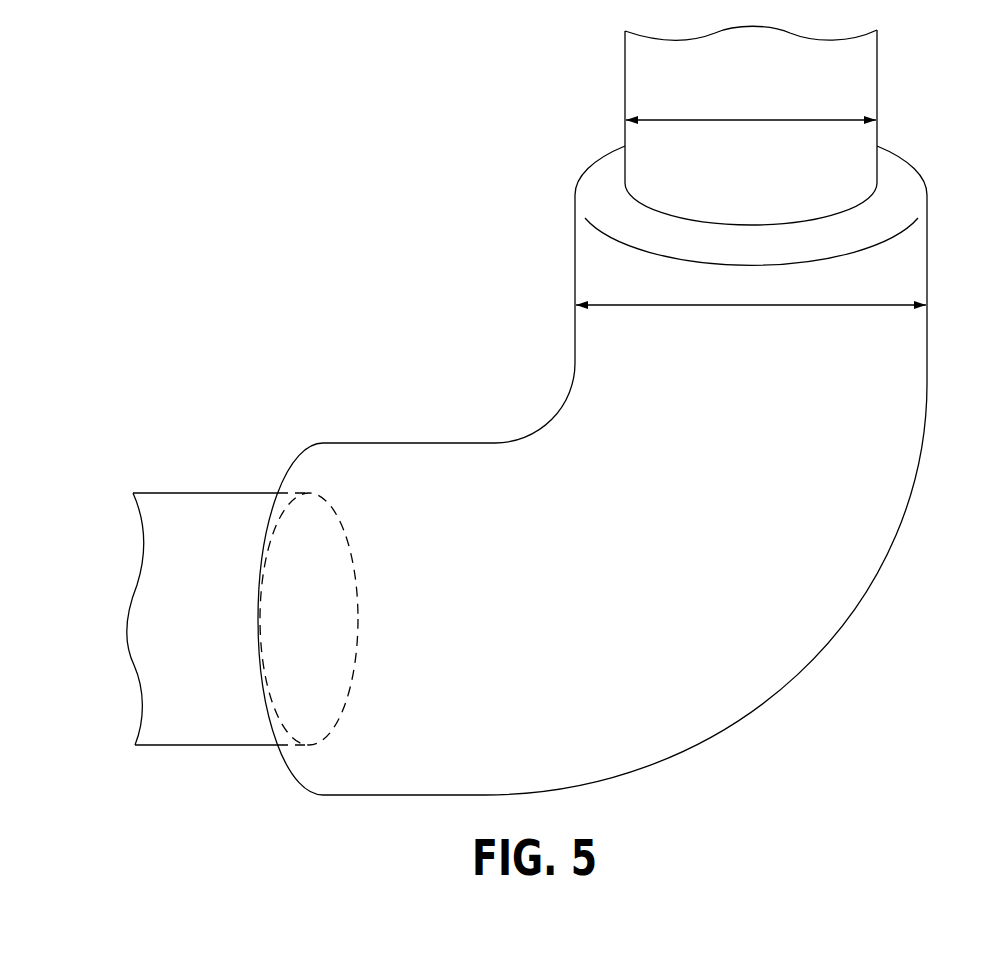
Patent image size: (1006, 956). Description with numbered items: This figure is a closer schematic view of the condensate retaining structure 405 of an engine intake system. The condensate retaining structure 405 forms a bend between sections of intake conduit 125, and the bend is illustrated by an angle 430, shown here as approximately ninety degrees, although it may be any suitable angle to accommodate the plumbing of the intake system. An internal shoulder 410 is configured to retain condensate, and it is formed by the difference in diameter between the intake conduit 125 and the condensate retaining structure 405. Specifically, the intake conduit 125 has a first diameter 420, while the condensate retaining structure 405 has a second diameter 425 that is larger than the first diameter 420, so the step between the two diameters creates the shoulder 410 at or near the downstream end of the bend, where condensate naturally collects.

The condensate retaining structure 405 is at (376, 366).
The internal shoulder 410 is at (897, 183).
The intake conduit 125 is at (650, 78).
The first diameter 420 is at (744, 117).
The second diameter 425 is at (762, 308).
The angle 430 is at (495, 443).